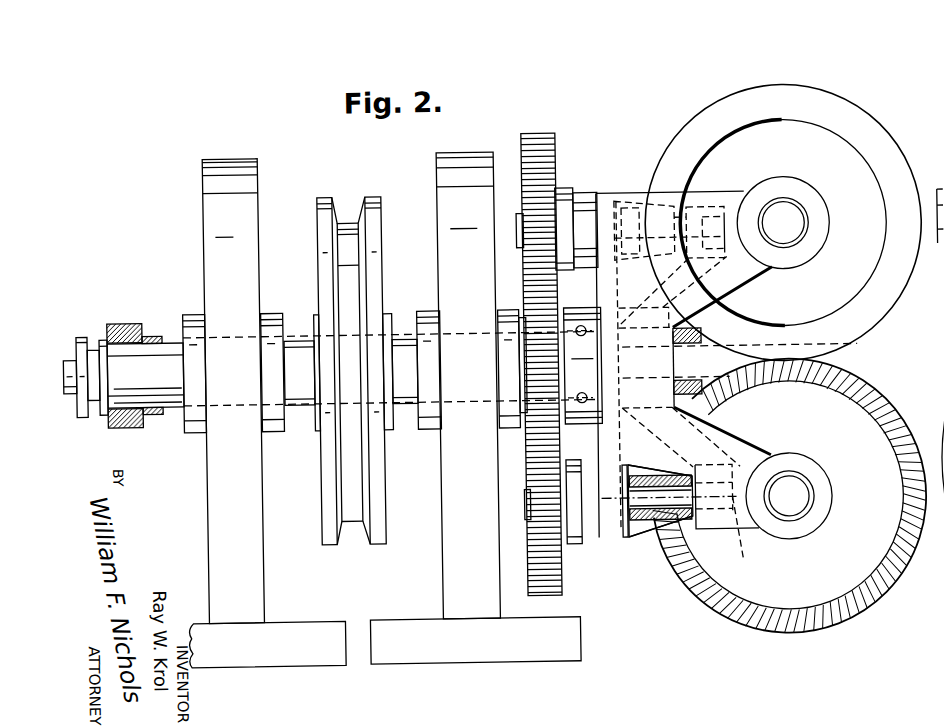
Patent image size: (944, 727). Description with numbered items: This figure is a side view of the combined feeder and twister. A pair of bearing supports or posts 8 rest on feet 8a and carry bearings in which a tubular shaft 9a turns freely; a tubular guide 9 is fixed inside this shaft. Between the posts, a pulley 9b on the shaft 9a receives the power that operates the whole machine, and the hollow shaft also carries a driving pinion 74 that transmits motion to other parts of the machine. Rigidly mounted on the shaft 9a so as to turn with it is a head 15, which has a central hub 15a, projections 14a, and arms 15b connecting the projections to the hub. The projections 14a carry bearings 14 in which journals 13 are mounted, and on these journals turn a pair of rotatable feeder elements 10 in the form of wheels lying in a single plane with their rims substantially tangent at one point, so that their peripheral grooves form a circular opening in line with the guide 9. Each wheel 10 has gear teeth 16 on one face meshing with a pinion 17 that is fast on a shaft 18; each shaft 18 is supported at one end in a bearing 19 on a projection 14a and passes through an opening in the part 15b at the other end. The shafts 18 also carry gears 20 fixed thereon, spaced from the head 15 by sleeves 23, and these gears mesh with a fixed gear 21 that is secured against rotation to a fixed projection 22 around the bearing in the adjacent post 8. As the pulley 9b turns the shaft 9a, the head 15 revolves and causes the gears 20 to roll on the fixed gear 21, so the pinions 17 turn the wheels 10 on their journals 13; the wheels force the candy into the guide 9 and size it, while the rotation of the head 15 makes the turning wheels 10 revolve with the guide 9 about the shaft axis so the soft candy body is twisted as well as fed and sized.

The bearings supports or posts 8 is at (217, 505).
The feet 8a is at (547, 663).
The tubular guide 9 is at (72, 390).
The tubular shaft 9a is at (175, 402).
The pulley 9b is at (343, 221).
The rotatable feeder elements 10 is at (826, 138).
The journal 13 is at (801, 242).
The bearings 14 is at (806, 201).
The projections 14a is at (750, 281).
The head 15 is at (655, 500).
The central hub 15a is at (587, 407).
The arms 15b is at (604, 289).
The gear teeth 16 is at (893, 588).
The pinions 17 is at (660, 467).
The shafts 18 is at (520, 225).
The bearings 19 is at (740, 200).
The gears 20 is at (540, 134).
The fixed gear 21 is at (523, 420).
The fixed projection 22 is at (273, 311).
The sleeves 23 is at (570, 200).
The driving pinion 74 is at (118, 325).